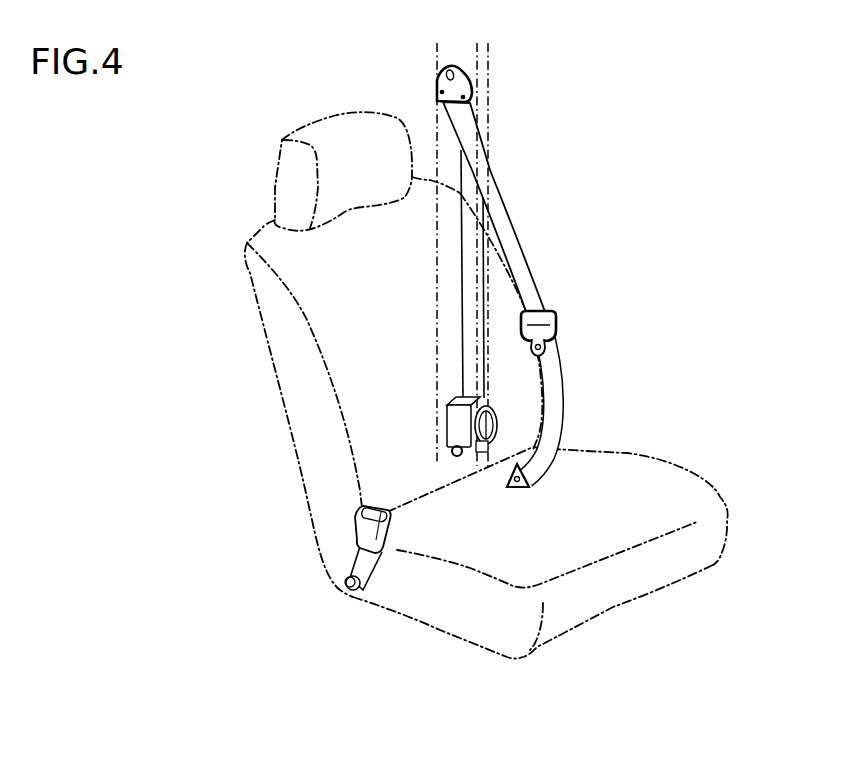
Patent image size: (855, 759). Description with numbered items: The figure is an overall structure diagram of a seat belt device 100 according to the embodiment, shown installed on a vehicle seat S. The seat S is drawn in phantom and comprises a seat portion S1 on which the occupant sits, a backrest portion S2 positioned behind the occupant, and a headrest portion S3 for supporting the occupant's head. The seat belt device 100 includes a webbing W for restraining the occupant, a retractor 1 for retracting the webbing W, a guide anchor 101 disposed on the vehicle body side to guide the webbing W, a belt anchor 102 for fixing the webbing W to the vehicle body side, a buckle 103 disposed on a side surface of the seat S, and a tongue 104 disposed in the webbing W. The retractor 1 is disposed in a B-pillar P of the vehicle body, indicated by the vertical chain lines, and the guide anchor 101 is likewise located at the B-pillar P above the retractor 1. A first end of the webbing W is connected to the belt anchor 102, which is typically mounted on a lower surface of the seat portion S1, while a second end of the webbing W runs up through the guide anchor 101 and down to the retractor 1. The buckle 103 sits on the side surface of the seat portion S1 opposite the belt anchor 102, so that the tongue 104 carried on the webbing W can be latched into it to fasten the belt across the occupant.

The retractor 1 is at (456, 422).
The seat belt device 100 is at (562, 263).
The guide anchor 101 is at (437, 82).
The belt anchor 102 is at (519, 489).
The buckle 103 is at (357, 525).
The tongue 104 is at (558, 326).
The webbing W is at (507, 212).
The B-pillar P is at (483, 63).
The seat S is at (221, 207).
The seat portion S1 is at (648, 490).
The backrest portion S2 is at (361, 270).
The headrest portion S3 is at (361, 158).